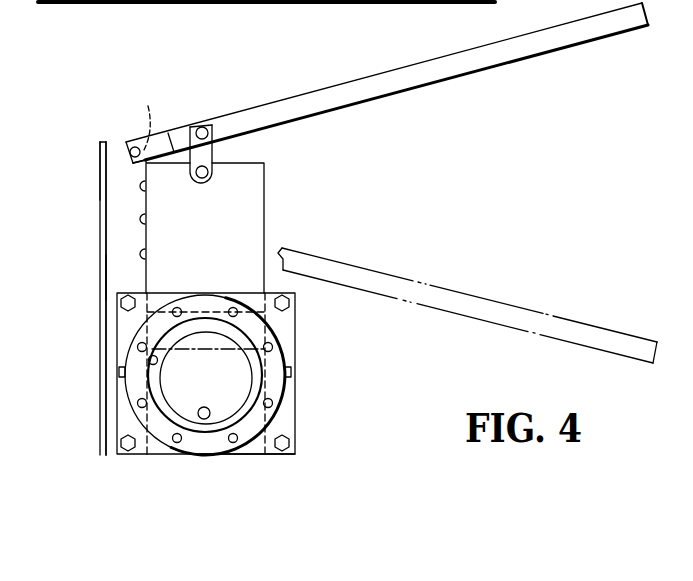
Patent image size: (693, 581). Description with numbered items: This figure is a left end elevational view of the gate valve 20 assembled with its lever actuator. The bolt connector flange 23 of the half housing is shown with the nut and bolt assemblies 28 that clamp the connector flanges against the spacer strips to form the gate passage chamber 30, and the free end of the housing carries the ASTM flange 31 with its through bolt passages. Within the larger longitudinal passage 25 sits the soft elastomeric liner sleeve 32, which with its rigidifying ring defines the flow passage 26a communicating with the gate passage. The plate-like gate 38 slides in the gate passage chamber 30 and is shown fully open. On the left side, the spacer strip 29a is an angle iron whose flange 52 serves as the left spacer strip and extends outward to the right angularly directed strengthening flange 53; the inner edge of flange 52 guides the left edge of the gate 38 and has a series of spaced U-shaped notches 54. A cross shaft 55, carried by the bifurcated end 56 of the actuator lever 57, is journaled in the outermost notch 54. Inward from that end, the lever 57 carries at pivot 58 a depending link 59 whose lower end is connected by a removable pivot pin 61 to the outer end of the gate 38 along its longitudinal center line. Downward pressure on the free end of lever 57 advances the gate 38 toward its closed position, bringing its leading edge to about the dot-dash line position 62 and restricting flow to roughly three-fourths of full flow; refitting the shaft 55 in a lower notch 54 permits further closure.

The gate valve 20 is at (310, 350).
The bolt connector flange 23 is at (287, 329).
The longitudinal passage 25 is at (152, 363).
The flow passage 26a is at (208, 414).
The nut and bolt assemblies 28 is at (293, 301).
The spacer strip (angle iron) 29a is at (100, 280).
The gate passage chamber 30 is at (254, 448).
The ASTM flange 31 is at (279, 389).
The liner sleeve 32 is at (178, 401).
The gate 38 is at (216, 245).
The flange of angle iron 52 is at (115, 203).
The strengthening flange 53 is at (102, 168).
The U-shaped notches 54 is at (170, 263).
The cross shaft 55 is at (131, 147).
The bifurcated end 56 is at (162, 138).
The actuator lever 57 is at (413, 67).
The pivot 58 is at (205, 128).
The depending link 59 is at (208, 155).
The pivot pin 61 is at (204, 174).
The dot-dash line position 62 is at (222, 350).